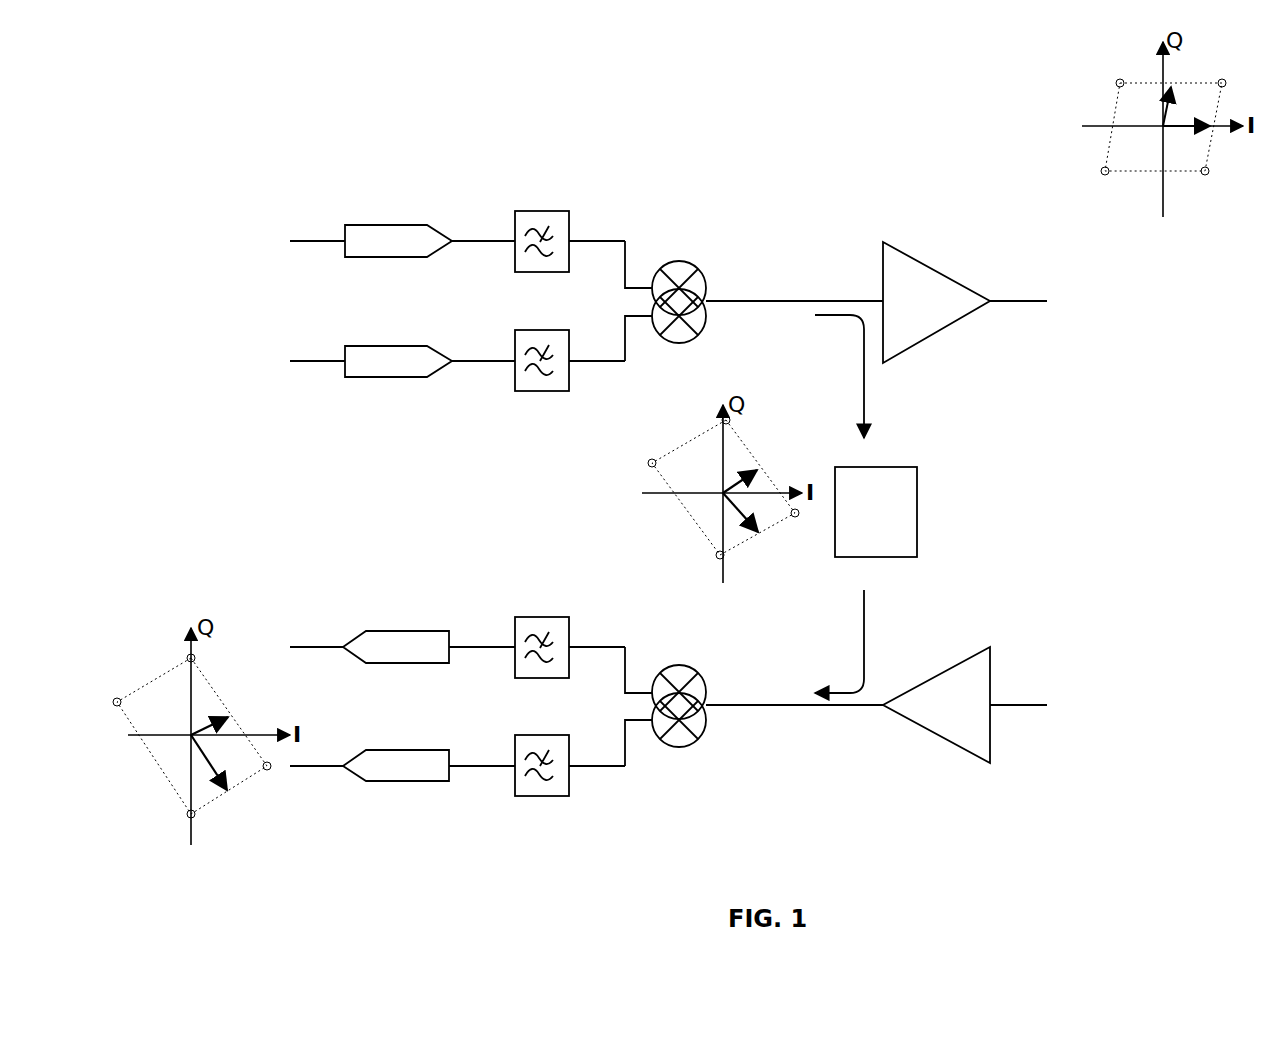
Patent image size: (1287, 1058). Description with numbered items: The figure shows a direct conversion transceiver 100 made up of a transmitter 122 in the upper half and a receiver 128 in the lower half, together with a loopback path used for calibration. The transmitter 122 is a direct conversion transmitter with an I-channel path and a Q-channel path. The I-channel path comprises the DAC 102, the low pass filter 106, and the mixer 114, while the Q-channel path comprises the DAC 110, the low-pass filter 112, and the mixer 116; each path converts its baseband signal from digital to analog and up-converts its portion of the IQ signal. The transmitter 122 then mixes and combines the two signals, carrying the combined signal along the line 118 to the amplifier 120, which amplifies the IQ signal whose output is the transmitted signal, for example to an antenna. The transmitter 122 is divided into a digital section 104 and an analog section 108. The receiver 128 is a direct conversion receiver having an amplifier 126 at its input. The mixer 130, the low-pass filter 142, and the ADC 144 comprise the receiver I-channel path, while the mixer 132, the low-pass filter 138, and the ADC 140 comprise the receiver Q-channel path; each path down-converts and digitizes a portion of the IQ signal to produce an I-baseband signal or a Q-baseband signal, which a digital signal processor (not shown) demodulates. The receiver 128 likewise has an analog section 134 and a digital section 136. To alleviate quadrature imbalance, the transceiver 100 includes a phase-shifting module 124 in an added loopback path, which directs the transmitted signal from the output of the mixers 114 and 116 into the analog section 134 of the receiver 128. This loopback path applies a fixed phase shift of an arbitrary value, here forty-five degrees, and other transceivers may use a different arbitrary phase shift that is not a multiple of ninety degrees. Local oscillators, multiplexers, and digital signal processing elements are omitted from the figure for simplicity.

The direct conversion transceiver 100 is at (187, 55).
The DAC 102 is at (357, 225).
The digital section 104 is at (410, 158).
The low pass filter 106 is at (528, 211).
The analog section 108 is at (582, 167).
The DAC 110 is at (357, 346).
The low-pass filter 112 is at (528, 330).
The mixer 114 is at (683, 263).
The mixer 116 is at (707, 307).
The combined RF signal line 118 is at (738, 301).
The amplifier 120 is at (933, 270).
The transmitter 122 is at (1152, 299).
The phase-shifting module 124 is at (918, 487).
The amplifier 126 is at (990, 675).
The receiver 128 is at (1152, 711).
The mixer 130 is at (683, 668).
The mixer 132 is at (707, 712).
The analog section 134 is at (568, 850).
The digital section 136 is at (398, 845).
The low-pass filter 138 is at (528, 735).
The ADC 140 is at (395, 750).
The low-pass filter 142 is at (528, 615).
The ADC 144 is at (397, 630).